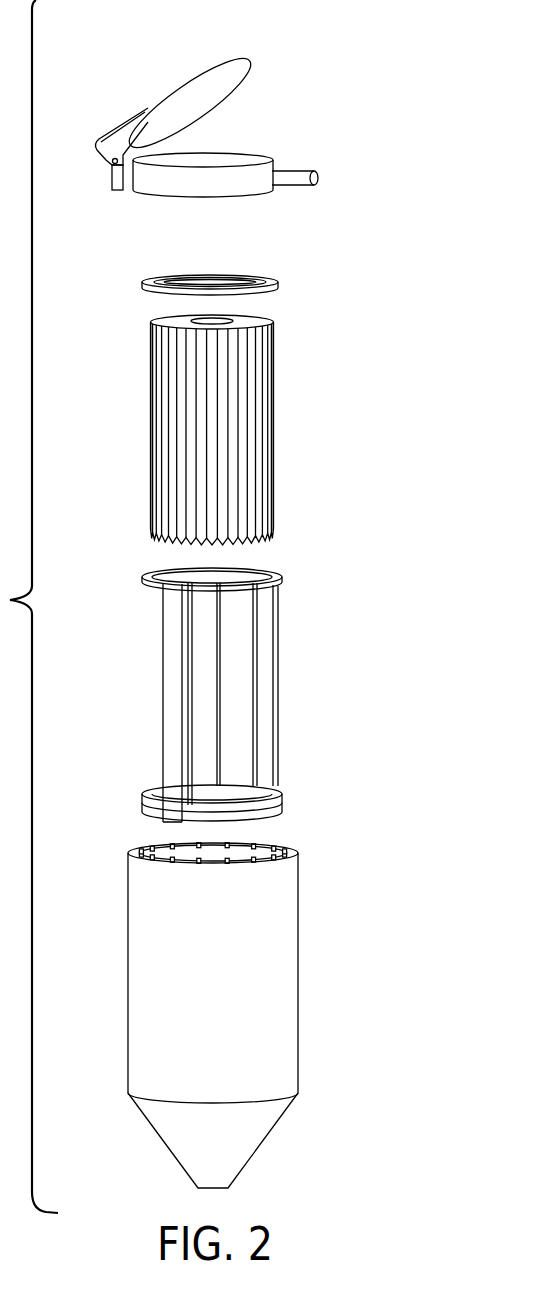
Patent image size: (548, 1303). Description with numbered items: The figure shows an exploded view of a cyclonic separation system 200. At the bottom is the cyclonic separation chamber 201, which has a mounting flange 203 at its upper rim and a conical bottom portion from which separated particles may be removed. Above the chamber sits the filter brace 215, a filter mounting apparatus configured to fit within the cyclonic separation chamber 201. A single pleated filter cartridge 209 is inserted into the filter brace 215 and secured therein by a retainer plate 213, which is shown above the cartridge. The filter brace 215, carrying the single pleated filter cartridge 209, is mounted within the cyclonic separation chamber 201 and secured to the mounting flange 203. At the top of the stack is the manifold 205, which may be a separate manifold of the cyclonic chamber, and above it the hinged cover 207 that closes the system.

The cyclonic separation system 200 is at (399, 81).
The cyclonic separation chamber 201 is at (300, 950).
The mounting flange 203 is at (130, 850).
The manifold 205 is at (261, 185).
The hinged cover 207 is at (247, 72).
The single pleated filter cartridge 209 is at (273, 417).
The retainer plate 213 is at (277, 283).
The filter brace 215 is at (277, 626).